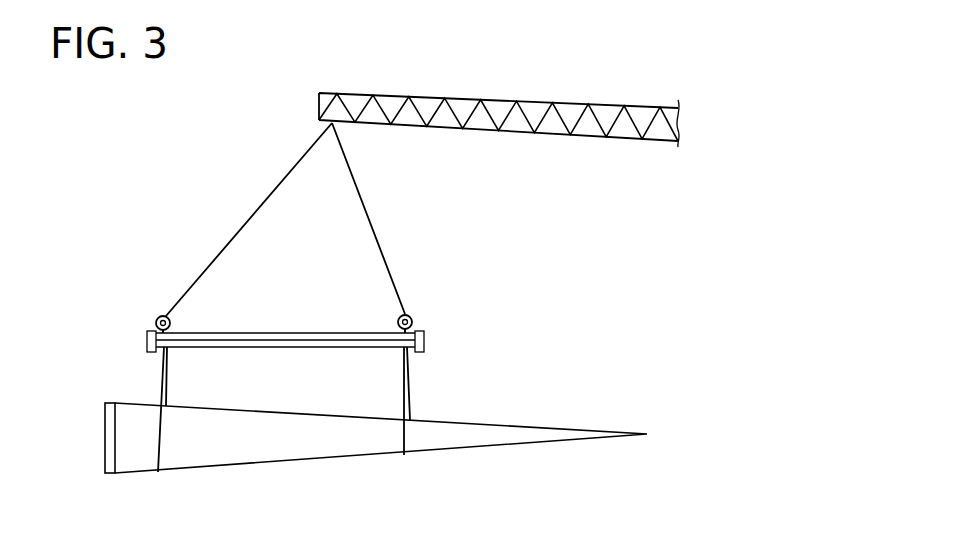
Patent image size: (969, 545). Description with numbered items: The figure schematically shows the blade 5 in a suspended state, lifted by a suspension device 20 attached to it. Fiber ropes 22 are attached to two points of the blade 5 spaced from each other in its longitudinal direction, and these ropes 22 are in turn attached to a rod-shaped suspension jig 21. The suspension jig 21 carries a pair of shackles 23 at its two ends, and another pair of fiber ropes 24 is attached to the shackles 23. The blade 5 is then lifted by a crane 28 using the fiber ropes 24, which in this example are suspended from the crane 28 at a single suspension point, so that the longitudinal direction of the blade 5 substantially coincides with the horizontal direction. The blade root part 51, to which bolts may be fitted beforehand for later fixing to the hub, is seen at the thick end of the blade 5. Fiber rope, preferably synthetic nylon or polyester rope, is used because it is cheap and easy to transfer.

The crane 28 is at (583, 108).
The suspension device 20 is at (170, 215).
The fiber ropes 24 is at (265, 193).
The suspension jig 21 is at (317, 332).
The shackles 23 is at (156, 317).
The fiber ropes 22 is at (162, 373).
The blade 5 is at (523, 425).
The blade root part 51 is at (105, 435).